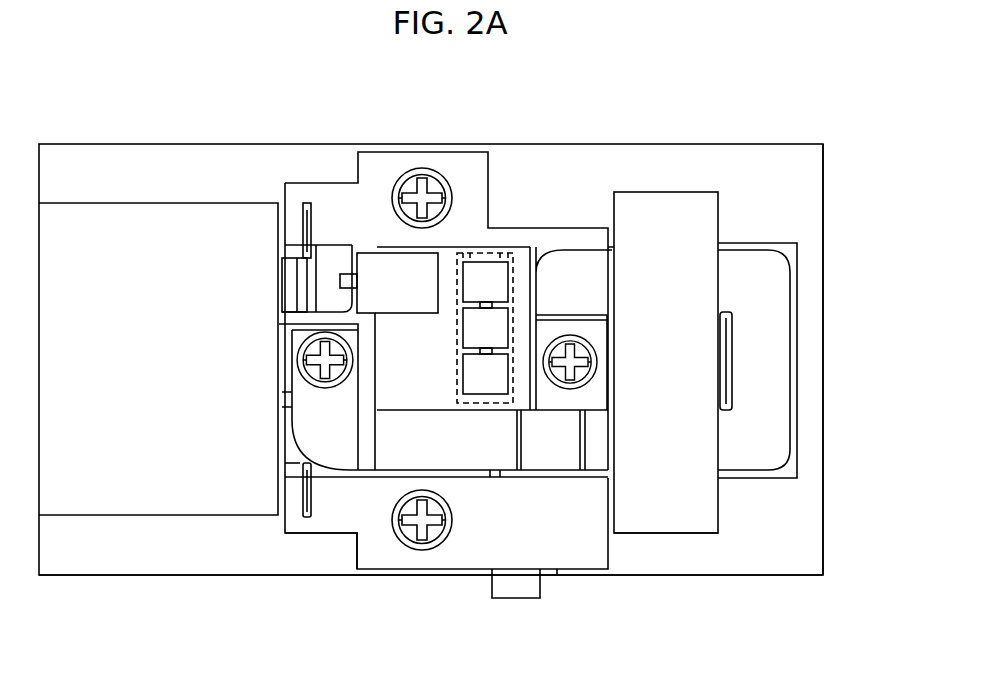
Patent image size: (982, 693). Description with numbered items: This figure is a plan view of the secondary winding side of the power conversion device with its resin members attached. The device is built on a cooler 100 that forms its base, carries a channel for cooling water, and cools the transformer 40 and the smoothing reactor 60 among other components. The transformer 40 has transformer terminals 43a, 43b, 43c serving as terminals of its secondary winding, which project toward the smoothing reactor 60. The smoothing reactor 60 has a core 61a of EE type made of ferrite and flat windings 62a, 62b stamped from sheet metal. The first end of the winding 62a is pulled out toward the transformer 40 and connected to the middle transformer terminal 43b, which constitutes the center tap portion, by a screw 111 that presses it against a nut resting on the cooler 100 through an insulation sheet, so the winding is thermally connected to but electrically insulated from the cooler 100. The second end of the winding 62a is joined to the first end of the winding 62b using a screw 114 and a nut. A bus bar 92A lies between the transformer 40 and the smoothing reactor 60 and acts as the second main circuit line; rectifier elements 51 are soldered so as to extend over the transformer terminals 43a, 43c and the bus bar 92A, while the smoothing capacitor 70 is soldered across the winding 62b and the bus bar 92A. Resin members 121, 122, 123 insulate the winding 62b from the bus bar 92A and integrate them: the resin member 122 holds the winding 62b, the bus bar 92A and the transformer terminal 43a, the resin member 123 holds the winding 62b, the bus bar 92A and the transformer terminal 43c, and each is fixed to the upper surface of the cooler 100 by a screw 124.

The transformer 40 is at (90, 203).
The cooler 100 is at (73, 577).
The resin member 122 is at (380, 152).
The transformer terminal 43a is at (283, 290).
The transformer terminal 43b is at (280, 370).
The transformer terminal 43c is at (285, 435).
The rectifier element 51 is at (373, 267).
The screw 111 is at (333, 375).
The resin member 123 is at (318, 535).
The screw 124 is at (428, 170).
The bus bar 92A is at (515, 293).
The smoothing capacitor 70 is at (445, 263).
The screw 114 is at (578, 335).
The smoothing reactor 60 is at (687, 192).
The core 61a is at (692, 515).
The resin member 121 is at (758, 243).
The winding 62a is at (772, 405).
The winding 62b is at (517, 582).